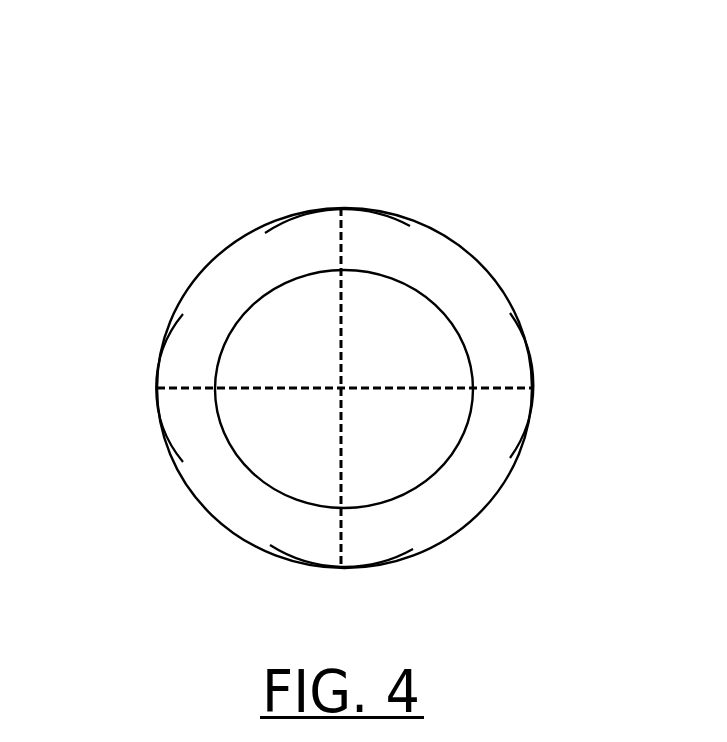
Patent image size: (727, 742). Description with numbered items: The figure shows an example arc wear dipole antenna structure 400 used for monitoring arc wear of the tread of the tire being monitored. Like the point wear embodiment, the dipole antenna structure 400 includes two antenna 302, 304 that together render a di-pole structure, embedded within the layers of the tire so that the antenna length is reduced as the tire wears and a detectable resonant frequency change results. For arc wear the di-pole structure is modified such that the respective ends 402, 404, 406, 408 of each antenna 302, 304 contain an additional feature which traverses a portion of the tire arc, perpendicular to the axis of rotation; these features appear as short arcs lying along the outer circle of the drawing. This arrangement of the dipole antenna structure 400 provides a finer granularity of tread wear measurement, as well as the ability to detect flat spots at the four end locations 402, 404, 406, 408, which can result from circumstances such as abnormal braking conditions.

The dipole antenna structure 400 is at (360, 297).
The antenna 302 is at (296, 388).
The antenna 304 is at (380, 329).
The end 402 is at (106, 388).
The end 404 is at (600, 385).
The end 406 is at (407, 221).
The end 408 is at (282, 553).